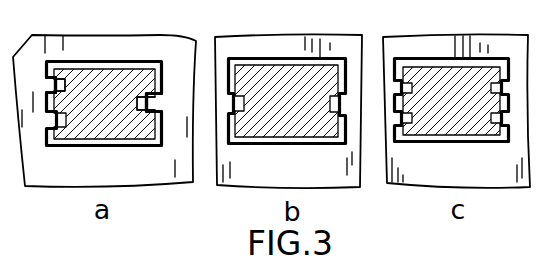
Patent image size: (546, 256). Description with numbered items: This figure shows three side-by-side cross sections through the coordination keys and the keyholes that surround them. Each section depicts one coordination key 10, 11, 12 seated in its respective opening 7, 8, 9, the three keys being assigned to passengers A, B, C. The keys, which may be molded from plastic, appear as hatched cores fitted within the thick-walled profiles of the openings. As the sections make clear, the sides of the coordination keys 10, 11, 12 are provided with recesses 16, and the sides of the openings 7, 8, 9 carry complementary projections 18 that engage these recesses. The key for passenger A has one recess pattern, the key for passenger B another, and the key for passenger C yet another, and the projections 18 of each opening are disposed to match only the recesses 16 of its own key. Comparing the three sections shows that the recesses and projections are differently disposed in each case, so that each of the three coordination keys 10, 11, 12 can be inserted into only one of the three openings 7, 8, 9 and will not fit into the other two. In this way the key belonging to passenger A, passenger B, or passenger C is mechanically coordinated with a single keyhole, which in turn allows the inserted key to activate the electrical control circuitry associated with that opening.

The opening 7 is at (73, 147).
The opening 8 is at (252, 147).
The opening 9 is at (422, 145).
The coordination key 10 is at (118, 133).
The coordination key 11 is at (295, 133).
The coordination key 12 is at (445, 145).
The recess 16 is at (68, 88).
The projection 18 is at (47, 85).
The passenger A is at (110, 115).
The passenger B is at (308, 122).
The passenger C is at (463, 122).